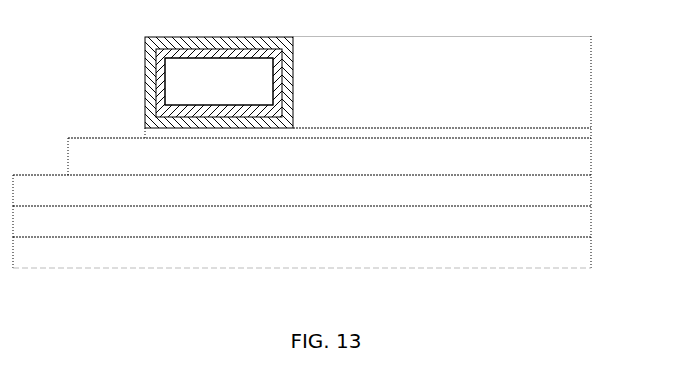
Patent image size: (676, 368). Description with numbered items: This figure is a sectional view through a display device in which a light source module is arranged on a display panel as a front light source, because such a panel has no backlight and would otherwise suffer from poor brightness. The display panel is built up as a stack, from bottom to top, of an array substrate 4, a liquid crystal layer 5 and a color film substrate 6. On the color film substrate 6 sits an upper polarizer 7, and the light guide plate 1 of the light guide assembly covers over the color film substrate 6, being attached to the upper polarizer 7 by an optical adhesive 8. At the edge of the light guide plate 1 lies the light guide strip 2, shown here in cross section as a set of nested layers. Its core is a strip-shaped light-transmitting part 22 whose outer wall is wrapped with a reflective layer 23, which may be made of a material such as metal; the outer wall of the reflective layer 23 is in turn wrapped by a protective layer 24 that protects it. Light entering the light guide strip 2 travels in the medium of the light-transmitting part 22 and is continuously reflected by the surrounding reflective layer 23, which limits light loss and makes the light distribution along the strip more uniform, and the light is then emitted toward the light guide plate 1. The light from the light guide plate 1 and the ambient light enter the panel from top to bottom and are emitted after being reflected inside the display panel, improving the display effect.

The light guide plate 1 is at (581, 78).
The light guide strip 2 is at (76, 39).
The light-transmitting part 22 is at (180, 97).
The reflective layer 23 is at (158, 72).
The protective layer 24 is at (147, 43).
The array substrate 4 is at (581, 255).
The liquid crystal layer 5 is at (581, 222).
The color film substrate 6 is at (581, 195).
The upper polarizer 7 is at (581, 165).
The optical adhesive 8 is at (581, 131).